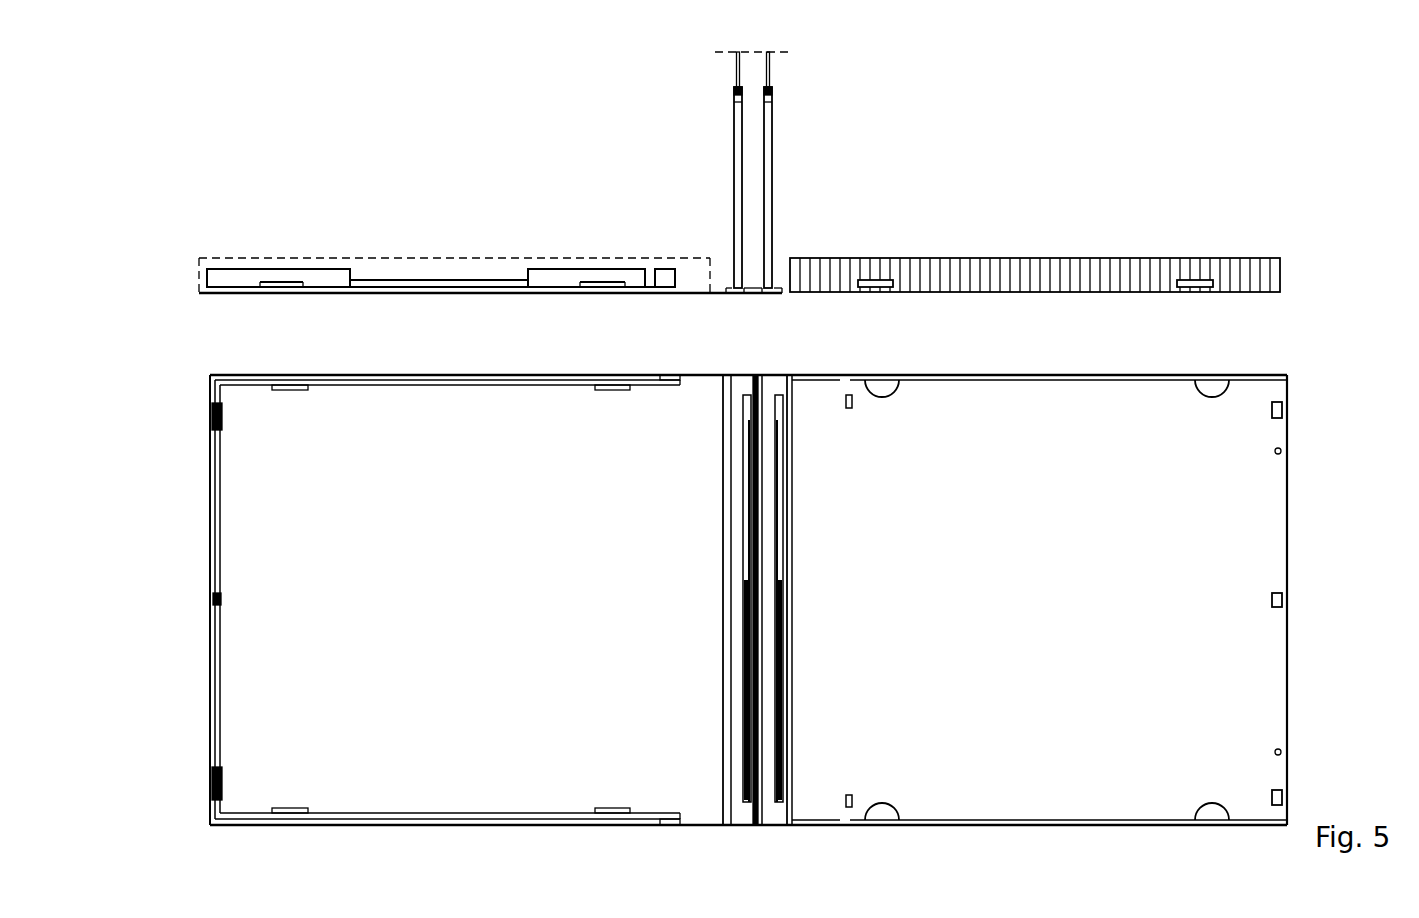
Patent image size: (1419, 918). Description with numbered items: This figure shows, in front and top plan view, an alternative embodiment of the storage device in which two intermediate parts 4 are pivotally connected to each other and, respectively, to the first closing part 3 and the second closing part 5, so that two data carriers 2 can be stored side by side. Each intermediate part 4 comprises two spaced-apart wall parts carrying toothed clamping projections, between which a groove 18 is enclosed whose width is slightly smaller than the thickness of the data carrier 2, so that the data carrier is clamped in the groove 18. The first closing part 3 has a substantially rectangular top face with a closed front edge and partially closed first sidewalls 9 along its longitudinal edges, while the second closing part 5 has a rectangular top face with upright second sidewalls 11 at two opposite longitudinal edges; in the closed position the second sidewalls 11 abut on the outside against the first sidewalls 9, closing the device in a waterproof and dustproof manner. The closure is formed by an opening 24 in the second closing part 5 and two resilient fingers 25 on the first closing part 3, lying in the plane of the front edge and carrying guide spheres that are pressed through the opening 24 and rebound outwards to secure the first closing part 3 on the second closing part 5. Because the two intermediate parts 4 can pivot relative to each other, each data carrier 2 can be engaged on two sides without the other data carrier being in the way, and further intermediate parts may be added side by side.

The data carrier 2 is at (768, 73).
The first closing part 3 is at (470, 600).
The intermediate part 4 is at (768, 190).
The second closing part 5 is at (1037, 600).
The first sidewalls 9 is at (550, 275).
The second sidewall 11 is at (1032, 274).
The groove 18 is at (773, 631).
The opening 24 is at (1284, 425).
The resilient fingers 25 is at (212, 430).